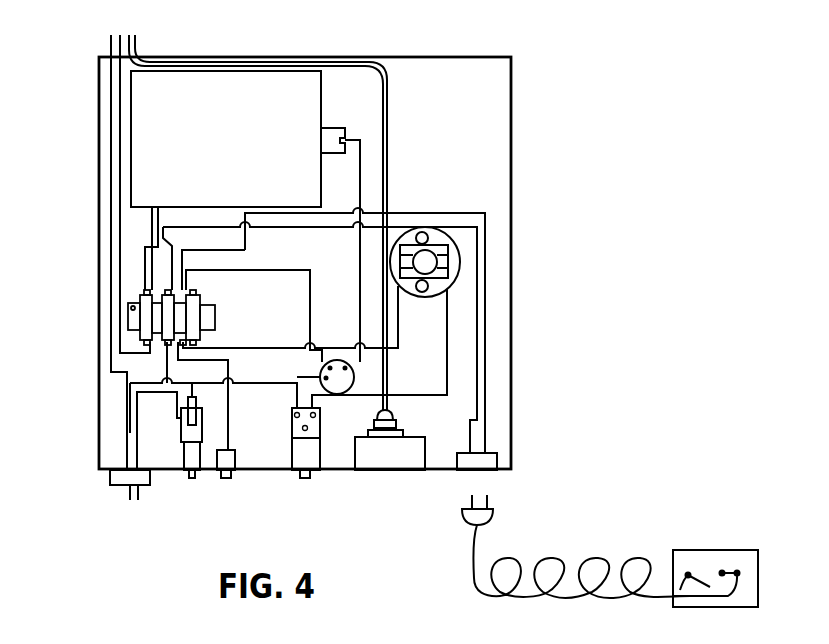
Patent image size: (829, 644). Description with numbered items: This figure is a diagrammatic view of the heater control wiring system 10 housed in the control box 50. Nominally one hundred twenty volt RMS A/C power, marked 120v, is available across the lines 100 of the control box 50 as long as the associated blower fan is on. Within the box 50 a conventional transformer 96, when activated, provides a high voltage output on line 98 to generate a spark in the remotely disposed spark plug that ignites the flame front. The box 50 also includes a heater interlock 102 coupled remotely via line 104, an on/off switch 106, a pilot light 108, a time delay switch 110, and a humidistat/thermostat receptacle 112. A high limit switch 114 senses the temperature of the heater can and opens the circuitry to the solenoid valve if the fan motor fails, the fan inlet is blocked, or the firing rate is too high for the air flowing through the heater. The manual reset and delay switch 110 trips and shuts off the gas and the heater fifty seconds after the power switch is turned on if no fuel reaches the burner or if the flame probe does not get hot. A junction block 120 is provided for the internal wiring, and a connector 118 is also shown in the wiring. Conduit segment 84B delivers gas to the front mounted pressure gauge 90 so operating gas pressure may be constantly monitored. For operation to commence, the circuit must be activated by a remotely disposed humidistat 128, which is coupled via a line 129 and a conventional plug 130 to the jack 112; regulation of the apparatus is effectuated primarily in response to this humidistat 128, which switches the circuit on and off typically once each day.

The system 10 is at (525, 404).
The control box 50 is at (523, 181).
The conduit segment 84B is at (383, 84).
The pressure monitor gauge 90 is at (384, 458).
The transformer 96 is at (248, 141).
The line 98 is at (358, 261).
The lines 100 is at (118, 204).
The heater interlock 102 is at (126, 482).
The line 104 is at (139, 496).
The on/off switch 106 is at (192, 478).
The pilot light 108 is at (230, 474).
The time delay switch 110 is at (304, 474).
The humidistat/thermostat receptacle 112 is at (497, 460).
The high limit switch 114 is at (405, 236).
The connector 118 is at (351, 389).
The junction block 120 is at (215, 316).
The 120 volt supply 120v is at (112, 46).
The humidistat 128 is at (712, 544).
The line 129 is at (548, 558).
The plug 130 is at (488, 517).